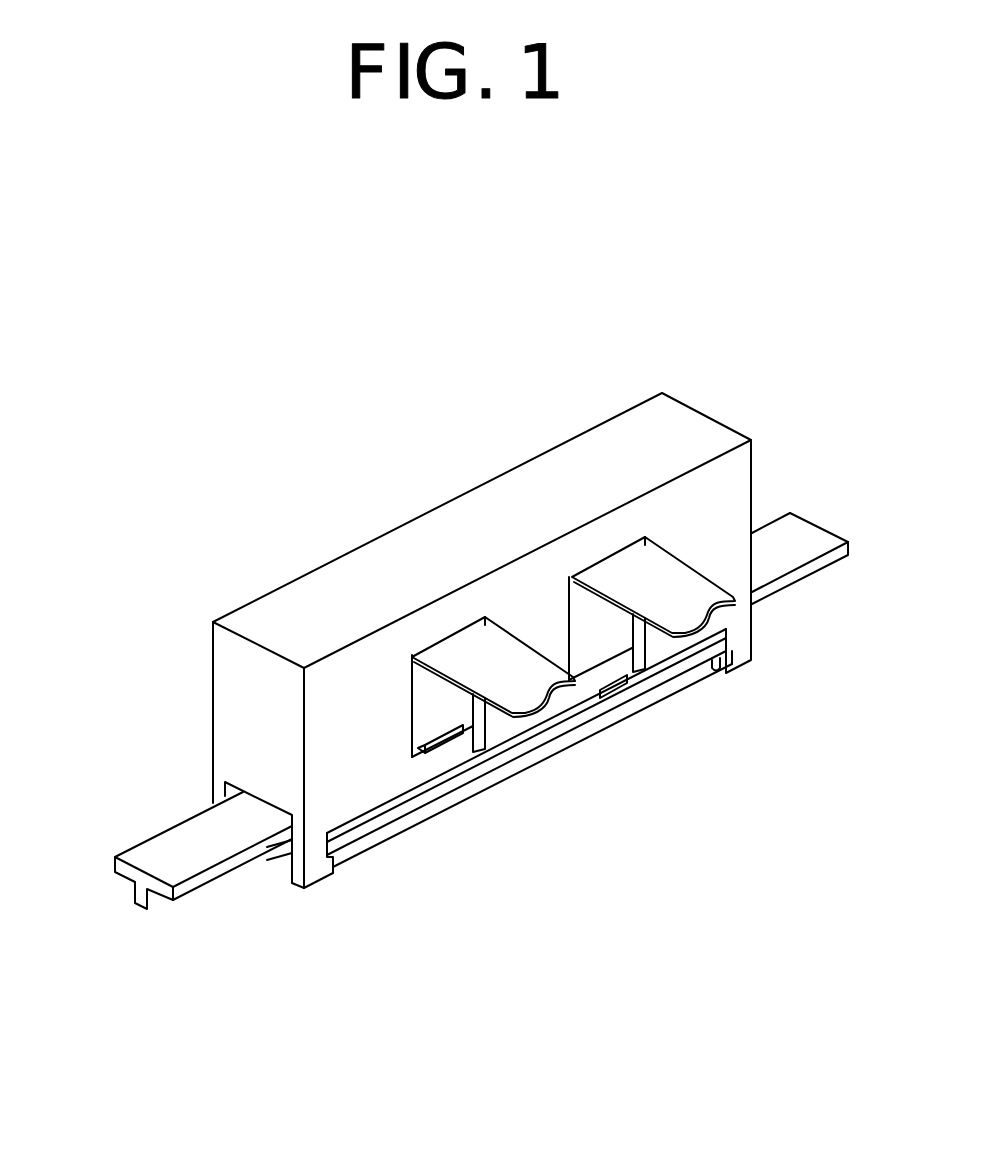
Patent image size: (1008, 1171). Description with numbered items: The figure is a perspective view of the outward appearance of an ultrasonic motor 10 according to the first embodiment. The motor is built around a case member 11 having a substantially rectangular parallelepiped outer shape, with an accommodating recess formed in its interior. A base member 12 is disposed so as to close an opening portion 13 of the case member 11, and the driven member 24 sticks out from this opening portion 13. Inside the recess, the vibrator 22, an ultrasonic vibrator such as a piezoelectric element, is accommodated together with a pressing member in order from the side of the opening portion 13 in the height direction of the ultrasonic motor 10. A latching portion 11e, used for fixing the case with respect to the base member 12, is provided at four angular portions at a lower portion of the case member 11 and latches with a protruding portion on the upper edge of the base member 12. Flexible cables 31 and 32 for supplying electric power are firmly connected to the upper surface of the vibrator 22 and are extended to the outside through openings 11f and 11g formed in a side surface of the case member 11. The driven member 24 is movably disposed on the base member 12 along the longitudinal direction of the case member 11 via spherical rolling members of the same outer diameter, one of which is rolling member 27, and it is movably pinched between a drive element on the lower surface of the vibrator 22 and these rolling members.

The ultrasonic motor 10 is at (562, 1151).
The case member 11 is at (642, 436).
The latching portion 11e is at (322, 862).
The opening 11f is at (412, 705).
The opening 11g is at (571, 622).
The base member 12 is at (527, 750).
The opening portion 13 is at (250, 797).
The vibrator 22 is at (640, 622).
The driven member 24 is at (222, 873).
The rolling member 27 is at (612, 688).
The flexible cable 31 is at (460, 657).
The flexible cable 32 is at (673, 590).